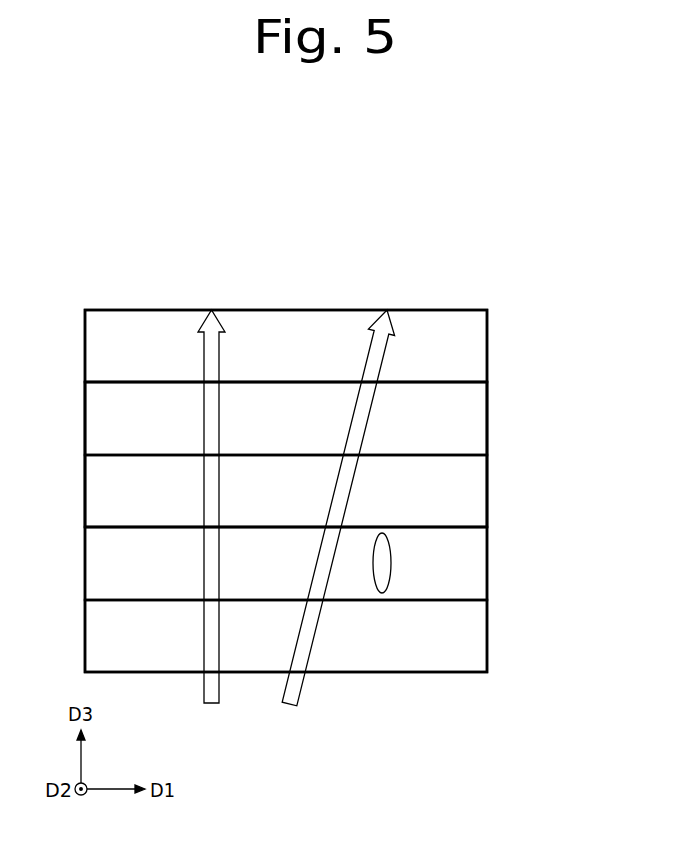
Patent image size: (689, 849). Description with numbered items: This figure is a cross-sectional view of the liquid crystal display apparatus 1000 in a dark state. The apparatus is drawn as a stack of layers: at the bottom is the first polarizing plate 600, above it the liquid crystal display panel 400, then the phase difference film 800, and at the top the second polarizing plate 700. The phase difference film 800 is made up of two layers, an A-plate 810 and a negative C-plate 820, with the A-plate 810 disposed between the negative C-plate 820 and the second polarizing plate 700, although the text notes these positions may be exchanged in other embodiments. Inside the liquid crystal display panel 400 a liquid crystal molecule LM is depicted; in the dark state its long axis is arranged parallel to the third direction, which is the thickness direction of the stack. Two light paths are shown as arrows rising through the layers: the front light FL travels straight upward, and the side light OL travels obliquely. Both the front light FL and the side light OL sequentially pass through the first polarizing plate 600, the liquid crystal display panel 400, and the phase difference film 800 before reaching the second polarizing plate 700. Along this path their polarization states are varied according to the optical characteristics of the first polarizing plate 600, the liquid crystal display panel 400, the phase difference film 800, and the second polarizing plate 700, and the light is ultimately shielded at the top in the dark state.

The liquid crystal display apparatus 1000 is at (422, 216).
The second polarizing plate 700 is at (475, 348).
The phase difference film 800 is at (564, 410).
The A-plate 810 is at (475, 420).
The negative C-plate 820 is at (475, 495).
The liquid crystal display panel 400 is at (475, 567).
The first polarizing plate 600 is at (475, 637).
The liquid crystal molecules LM is at (388, 565).
The front light FL is at (211, 506).
The side light OL is at (350, 506).